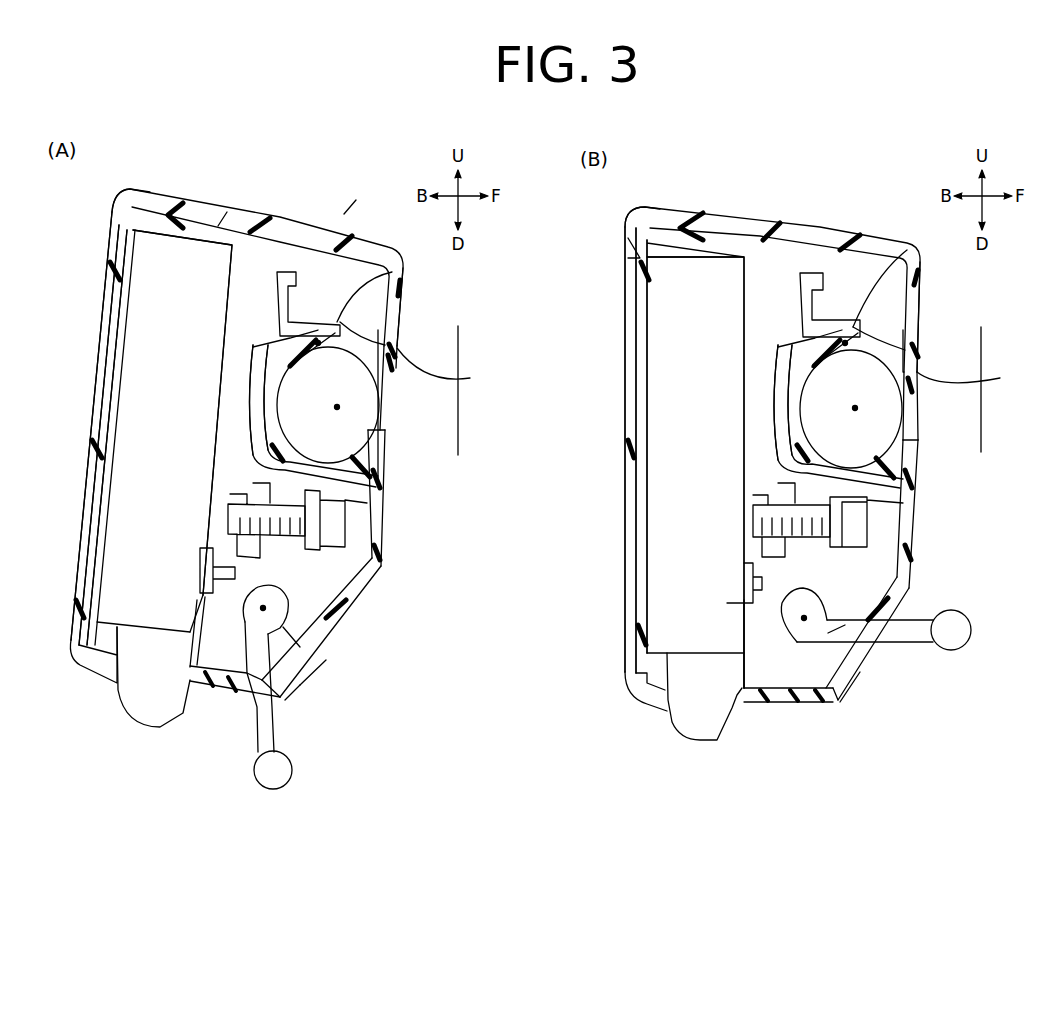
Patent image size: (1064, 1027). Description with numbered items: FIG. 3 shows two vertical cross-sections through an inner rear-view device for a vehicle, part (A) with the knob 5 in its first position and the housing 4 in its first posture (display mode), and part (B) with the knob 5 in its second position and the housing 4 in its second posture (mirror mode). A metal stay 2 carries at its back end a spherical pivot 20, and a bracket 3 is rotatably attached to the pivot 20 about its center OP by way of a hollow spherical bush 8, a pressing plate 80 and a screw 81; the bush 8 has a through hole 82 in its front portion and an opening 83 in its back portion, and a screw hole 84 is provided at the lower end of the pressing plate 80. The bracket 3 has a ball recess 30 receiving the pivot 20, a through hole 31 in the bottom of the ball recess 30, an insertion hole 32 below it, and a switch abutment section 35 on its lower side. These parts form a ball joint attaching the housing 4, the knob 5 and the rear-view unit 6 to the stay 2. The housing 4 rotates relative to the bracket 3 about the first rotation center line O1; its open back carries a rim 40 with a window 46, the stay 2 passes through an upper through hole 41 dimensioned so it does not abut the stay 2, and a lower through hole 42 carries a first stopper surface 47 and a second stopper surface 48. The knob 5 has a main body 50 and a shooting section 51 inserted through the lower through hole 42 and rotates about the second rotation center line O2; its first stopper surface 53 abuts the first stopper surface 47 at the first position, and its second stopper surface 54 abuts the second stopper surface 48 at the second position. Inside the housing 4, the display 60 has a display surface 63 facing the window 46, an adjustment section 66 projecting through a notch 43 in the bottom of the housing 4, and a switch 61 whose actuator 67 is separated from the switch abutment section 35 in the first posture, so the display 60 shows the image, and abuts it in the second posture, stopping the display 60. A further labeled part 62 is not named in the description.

The stay 2 is at (466, 345).
The bracket 3 is at (285, 253).
The housing 4 is at (202, 187).
The knob 5 is at (631, 713).
The rear-view unit 6 is at (229, 234).
The bush 8 is at (383, 468).
The pivot 20 is at (415, 422).
The ball recess 30 is at (337, 318).
The through hole 31 is at (390, 331).
The insertion hole 32 is at (375, 561).
The switch abutment section 35 is at (204, 606).
The rim 40 is at (138, 200).
The upper through hole 41 is at (443, 366).
The lower through hole 42 is at (297, 671).
The notch 43 is at (183, 684).
The window 46 is at (114, 263).
The first stopper surface 47 is at (287, 709).
The second stopper surface 48 is at (337, 641).
The main body 50 is at (330, 621).
The shooting section 51 is at (262, 793).
The first stopper surface 53 is at (258, 771).
The second stopper surface 54 is at (292, 758).
The display 60 is at (138, 276).
The switch 61 is at (200, 561).
The rear outer wall 62 is at (94, 409).
The display surface 63 is at (125, 301).
The adjustment section 66 is at (122, 718).
The actuator 67 is at (237, 574).
The pressing plate 80 is at (258, 344).
The screw 81 is at (354, 613).
The through hole 82 is at (393, 353).
The opening 83 is at (272, 376).
The screw hole 84 is at (228, 519).
The center of the pivot OP is at (340, 407).
The first rotation center line O1 is at (318, 343).
The second rotation center line O2 is at (263, 608).